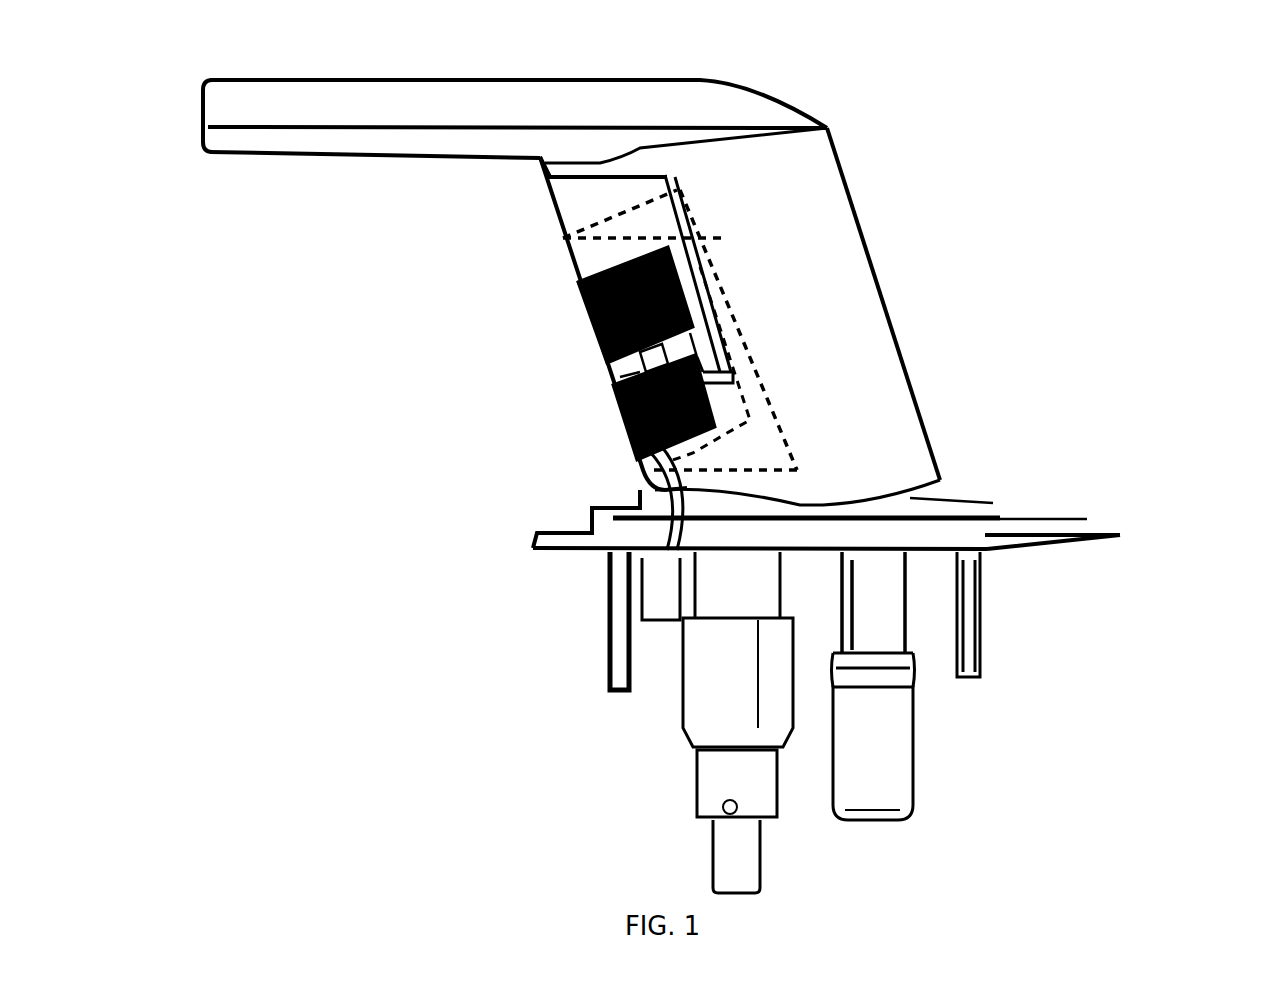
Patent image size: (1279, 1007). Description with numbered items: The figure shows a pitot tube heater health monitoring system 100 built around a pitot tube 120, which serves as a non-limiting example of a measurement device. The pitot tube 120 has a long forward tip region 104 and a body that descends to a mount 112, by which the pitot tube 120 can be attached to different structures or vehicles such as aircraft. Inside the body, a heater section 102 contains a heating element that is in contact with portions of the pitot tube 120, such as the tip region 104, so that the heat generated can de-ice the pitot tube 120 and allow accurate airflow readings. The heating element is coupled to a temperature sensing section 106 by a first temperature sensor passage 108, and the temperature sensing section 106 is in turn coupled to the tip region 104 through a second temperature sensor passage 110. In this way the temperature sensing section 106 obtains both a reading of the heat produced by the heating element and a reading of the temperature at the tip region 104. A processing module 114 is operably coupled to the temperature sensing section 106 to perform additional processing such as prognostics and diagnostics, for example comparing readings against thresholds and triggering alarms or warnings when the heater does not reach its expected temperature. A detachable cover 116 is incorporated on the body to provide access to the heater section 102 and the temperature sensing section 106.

The pitot tube heater health monitoring system 100 is at (692, 41).
The heater section 102 is at (593, 333).
The tip region 104 is at (310, 110).
The temperature sensing section 106 is at (635, 433).
The first temperature sensor passage 108 is at (620, 380).
The second temperature sensor passage 110 is at (707, 267).
The mount 112 is at (973, 523).
The processing module 114 is at (663, 607).
The detachable cover 116 is at (583, 250).
The pitot tube 120 is at (760, 195).